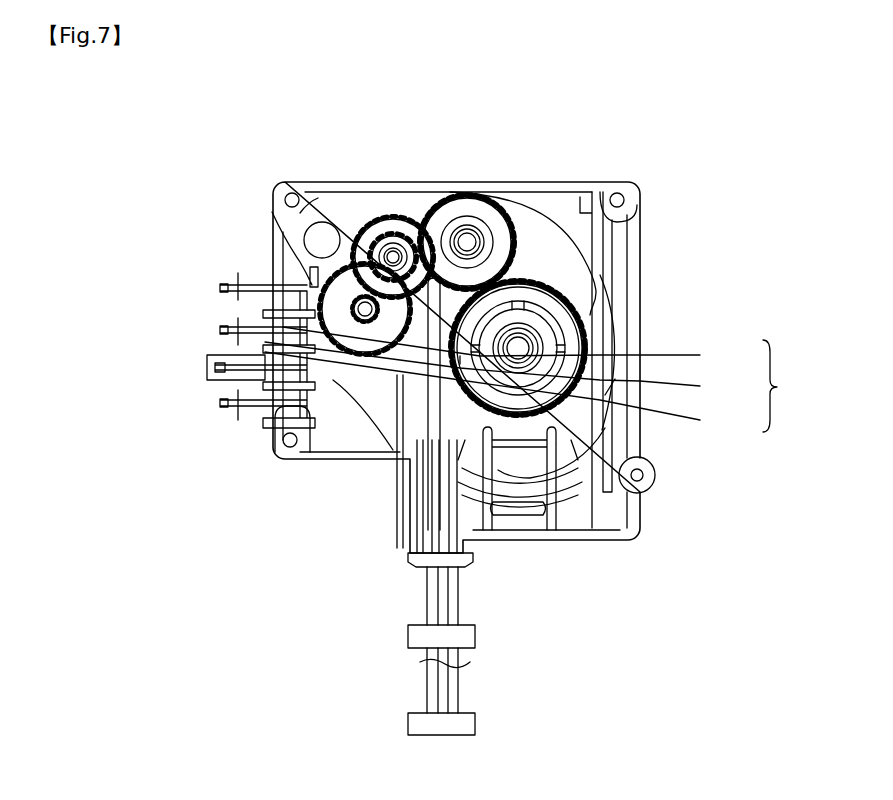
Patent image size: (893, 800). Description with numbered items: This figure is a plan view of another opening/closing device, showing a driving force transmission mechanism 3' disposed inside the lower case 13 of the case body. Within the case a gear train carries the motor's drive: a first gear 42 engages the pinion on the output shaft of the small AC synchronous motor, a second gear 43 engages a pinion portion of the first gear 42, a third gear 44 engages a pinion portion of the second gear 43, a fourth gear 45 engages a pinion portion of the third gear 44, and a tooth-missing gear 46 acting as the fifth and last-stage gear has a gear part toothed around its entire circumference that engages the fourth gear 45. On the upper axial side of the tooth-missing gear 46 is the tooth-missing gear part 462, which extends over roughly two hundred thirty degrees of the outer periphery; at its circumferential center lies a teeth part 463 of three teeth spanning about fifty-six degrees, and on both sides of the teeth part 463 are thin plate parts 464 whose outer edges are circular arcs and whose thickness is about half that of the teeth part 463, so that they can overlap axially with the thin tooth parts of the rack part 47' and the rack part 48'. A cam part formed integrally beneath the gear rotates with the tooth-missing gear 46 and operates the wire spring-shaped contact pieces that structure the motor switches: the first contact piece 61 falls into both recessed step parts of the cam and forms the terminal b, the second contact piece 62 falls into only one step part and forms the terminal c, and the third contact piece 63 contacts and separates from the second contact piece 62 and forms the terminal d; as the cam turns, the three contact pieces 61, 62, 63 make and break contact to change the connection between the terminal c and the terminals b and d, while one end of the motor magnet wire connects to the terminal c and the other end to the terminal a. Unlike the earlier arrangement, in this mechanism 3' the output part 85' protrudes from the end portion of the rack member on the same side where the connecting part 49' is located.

The driving force transmission mechanism 3' is at (742, 127).
The lower case 13 is at (642, 212).
The first gear 42 is at (397, 480).
The second gear 43 is at (275, 262).
The third gear 44 is at (398, 214).
The fourth gear 45 is at (476, 198).
The tooth-missing gear 46 is at (556, 282).
The rack part 47' is at (622, 455).
The rack part 48' is at (398, 532).
The connecting part 49' is at (557, 554).
The first wire spring-shaped contact piece 61 is at (287, 450).
The second wire spring-shaped contact piece 62 is at (360, 372).
The third wire spring-shaped contact piece 63 is at (335, 352).
The output part 85' is at (487, 669).
The tooth-missing gear part 462 is at (800, 386).
The teeth part 463 is at (511, 393).
The thin plate parts 464 is at (511, 363).
The terminal a is at (222, 286).
The terminal b is at (222, 328).
The terminal c is at (215, 365).
The terminal d is at (222, 401).